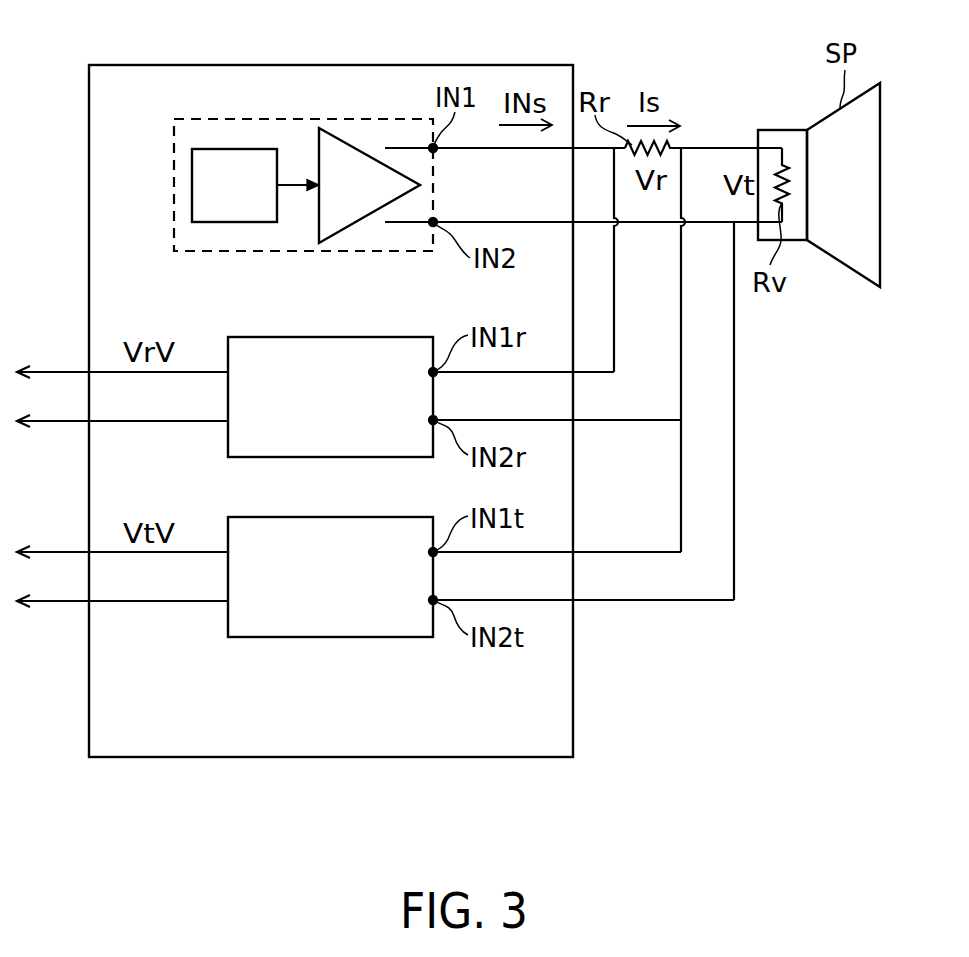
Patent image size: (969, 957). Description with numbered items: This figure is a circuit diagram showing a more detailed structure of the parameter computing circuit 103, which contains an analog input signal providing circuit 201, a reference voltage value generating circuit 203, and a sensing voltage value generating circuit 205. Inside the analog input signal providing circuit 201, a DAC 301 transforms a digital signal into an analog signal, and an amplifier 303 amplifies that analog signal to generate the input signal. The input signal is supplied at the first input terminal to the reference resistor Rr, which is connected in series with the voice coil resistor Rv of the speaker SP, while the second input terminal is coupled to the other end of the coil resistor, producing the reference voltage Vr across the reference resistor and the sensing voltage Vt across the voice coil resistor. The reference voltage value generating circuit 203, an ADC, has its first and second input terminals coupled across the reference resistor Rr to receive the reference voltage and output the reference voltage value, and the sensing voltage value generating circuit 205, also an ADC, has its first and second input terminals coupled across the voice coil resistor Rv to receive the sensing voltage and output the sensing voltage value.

The parameter computing circuit 103 is at (512, 65).
The analog input signal providing circuit 201 is at (174, 138).
The DAC 301 is at (233, 149).
The amplifier 303 is at (345, 143).
The reference voltage value generating circuit 203 is at (268, 337).
The sensing voltage value generating circuit 205 is at (265, 637).